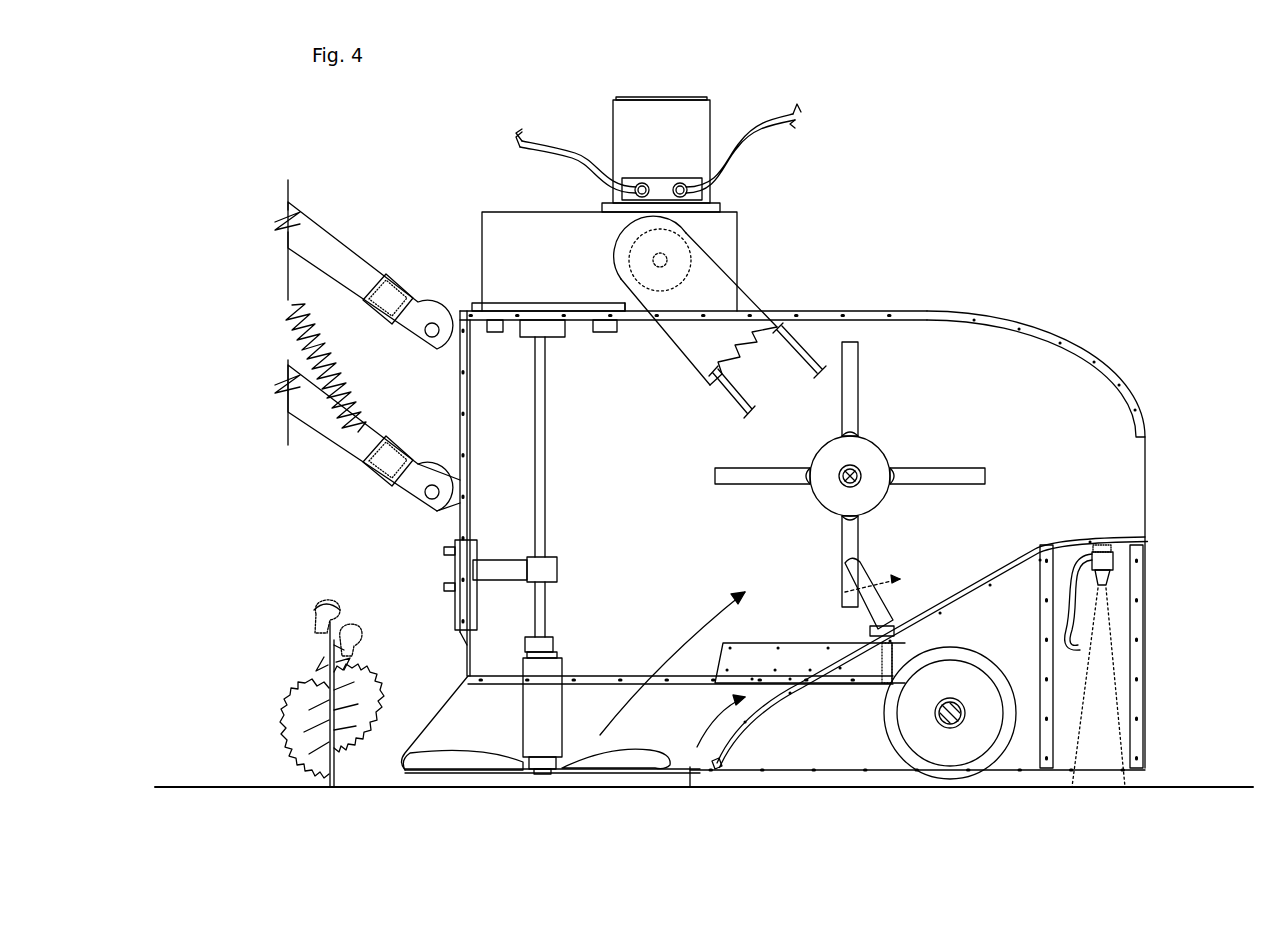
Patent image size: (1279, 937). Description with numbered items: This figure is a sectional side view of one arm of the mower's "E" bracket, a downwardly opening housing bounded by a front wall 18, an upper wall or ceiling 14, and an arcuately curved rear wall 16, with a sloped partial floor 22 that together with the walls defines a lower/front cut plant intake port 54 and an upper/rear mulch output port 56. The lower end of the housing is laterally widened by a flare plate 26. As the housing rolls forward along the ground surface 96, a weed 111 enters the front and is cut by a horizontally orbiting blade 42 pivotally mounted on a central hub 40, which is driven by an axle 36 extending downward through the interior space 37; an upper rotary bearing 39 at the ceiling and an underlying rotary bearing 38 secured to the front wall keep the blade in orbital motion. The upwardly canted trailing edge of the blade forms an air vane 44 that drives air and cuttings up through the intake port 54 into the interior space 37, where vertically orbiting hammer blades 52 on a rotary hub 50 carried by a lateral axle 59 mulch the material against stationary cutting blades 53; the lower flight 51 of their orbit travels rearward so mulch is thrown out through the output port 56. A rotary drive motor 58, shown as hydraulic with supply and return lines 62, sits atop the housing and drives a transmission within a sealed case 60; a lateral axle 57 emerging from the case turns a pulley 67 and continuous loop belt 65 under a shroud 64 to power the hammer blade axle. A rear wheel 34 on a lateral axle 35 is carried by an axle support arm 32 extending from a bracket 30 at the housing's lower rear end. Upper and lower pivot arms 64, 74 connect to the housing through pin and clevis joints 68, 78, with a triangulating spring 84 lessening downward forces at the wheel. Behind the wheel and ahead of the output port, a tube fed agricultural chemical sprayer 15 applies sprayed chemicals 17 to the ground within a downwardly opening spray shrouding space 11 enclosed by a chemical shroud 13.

The spray shrouding space 11 is at (1063, 712).
The chemical shroud 13 is at (1143, 655).
The upper wall or ceiling 14 is at (928, 311).
The tube fed agricultural chemical sprayer 15 is at (1107, 567).
The arcuately curved rear wall 16 is at (1120, 393).
The sprayed chemicals 17 is at (1112, 635).
The front wall 18 is at (457, 433).
The sloped partial floor 22 is at (740, 728).
The right flare plate 26 is at (442, 723).
The bracket 30 is at (835, 677).
The axle support arm 32 is at (908, 653).
The rear wheel 34 is at (960, 757).
The lateral axle 35 is at (938, 727).
The laterally paired axle 36 is at (543, 387).
The interior space 37 is at (667, 495).
The underlying rotary bearing 38 is at (555, 570).
The upper rotary bearing 39 is at (560, 340).
The central hub 40 is at (553, 713).
The horizontally orbiting blade 42 is at (468, 773).
The air vane 44 is at (440, 753).
The rotary hub 50 is at (863, 445).
The lower flight 51 is at (888, 585).
The hammer blade 52 is at (913, 468).
The stationary cutting blade 53 is at (880, 610).
The cut plant intake port 54 is at (502, 665).
The mulch output port 56 is at (1130, 483).
The lateral axle 57 is at (663, 253).
The rotary drive motor 58 is at (640, 138).
The lateral axle 59 is at (848, 483).
The sealed case 60 is at (495, 243).
The hydraulic fluid supply and return lines 62 is at (543, 140).
The upper pivot arm 64 is at (342, 238).
The continuous loop belt 65 is at (800, 357).
The pulley 67 is at (692, 252).
The pin and clevis joint 68 is at (428, 318).
The lower pivot arm 74 is at (342, 437).
The pin and clevis joint 78 is at (443, 510).
The triangulating spring 84 is at (310, 320).
The ground surface 96 is at (1185, 785).
The weed 111 is at (330, 693).